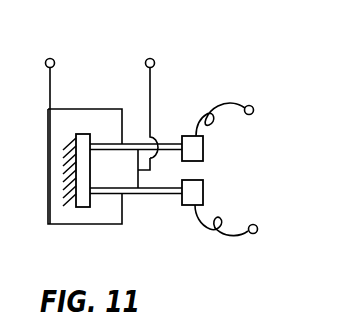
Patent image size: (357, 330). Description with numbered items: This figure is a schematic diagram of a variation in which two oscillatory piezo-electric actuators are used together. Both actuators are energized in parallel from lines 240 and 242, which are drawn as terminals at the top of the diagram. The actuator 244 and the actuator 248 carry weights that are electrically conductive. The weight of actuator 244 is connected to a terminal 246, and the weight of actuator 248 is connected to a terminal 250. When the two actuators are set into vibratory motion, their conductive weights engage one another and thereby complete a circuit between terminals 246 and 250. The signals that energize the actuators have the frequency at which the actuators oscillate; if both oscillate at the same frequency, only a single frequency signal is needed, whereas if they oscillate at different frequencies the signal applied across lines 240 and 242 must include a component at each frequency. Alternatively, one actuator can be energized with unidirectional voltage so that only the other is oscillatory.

The line 240 is at (50, 128).
The line 242 is at (150, 95).
The actuator 244 is at (174, 137).
The terminal 246 is at (252, 114).
The actuator 248 is at (156, 197).
The terminal 250 is at (257, 226).